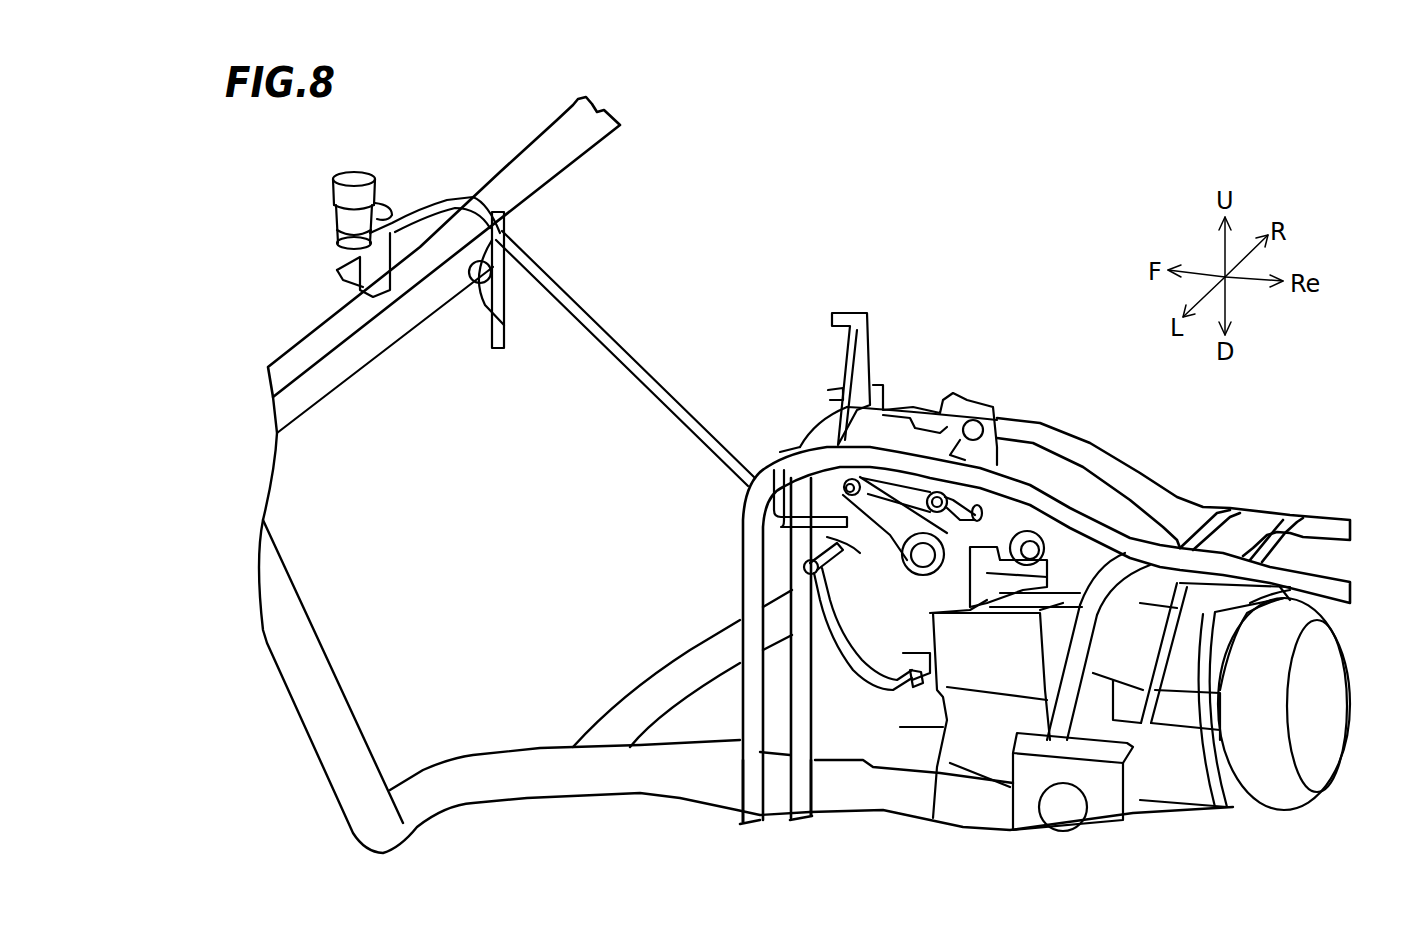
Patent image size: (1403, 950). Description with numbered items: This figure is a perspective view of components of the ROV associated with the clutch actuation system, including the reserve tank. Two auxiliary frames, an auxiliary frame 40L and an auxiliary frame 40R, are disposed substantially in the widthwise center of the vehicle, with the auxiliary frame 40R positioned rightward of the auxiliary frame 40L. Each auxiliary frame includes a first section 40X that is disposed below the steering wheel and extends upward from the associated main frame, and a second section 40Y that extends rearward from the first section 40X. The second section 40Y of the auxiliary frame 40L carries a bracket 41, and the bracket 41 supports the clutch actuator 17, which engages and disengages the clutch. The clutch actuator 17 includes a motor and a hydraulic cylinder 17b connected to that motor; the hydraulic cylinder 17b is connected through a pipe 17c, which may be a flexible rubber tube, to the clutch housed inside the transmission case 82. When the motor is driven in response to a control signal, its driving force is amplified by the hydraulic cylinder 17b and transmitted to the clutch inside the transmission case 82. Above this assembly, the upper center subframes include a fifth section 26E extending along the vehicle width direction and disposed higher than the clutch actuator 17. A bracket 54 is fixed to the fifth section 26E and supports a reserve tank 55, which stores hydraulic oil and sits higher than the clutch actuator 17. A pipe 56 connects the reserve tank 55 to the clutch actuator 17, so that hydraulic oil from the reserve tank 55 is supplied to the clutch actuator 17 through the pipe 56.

The fifth section 26E is at (518, 177).
The reserve tank 55 is at (367, 192).
The bracket 54 is at (367, 267).
The pipe 56 is at (617, 350).
The second section 40Y is at (927, 417).
The auxiliary frame 40L is at (727, 708).
The auxiliary frame 40R is at (823, 708).
The first section 40X is at (795, 750).
The bracket 41 is at (925, 470).
The clutch actuator 17 is at (913, 530).
The hydraulic cylinder 17b is at (847, 525).
The pipe 17c is at (867, 687).
The transmission case 82 is at (1013, 660).